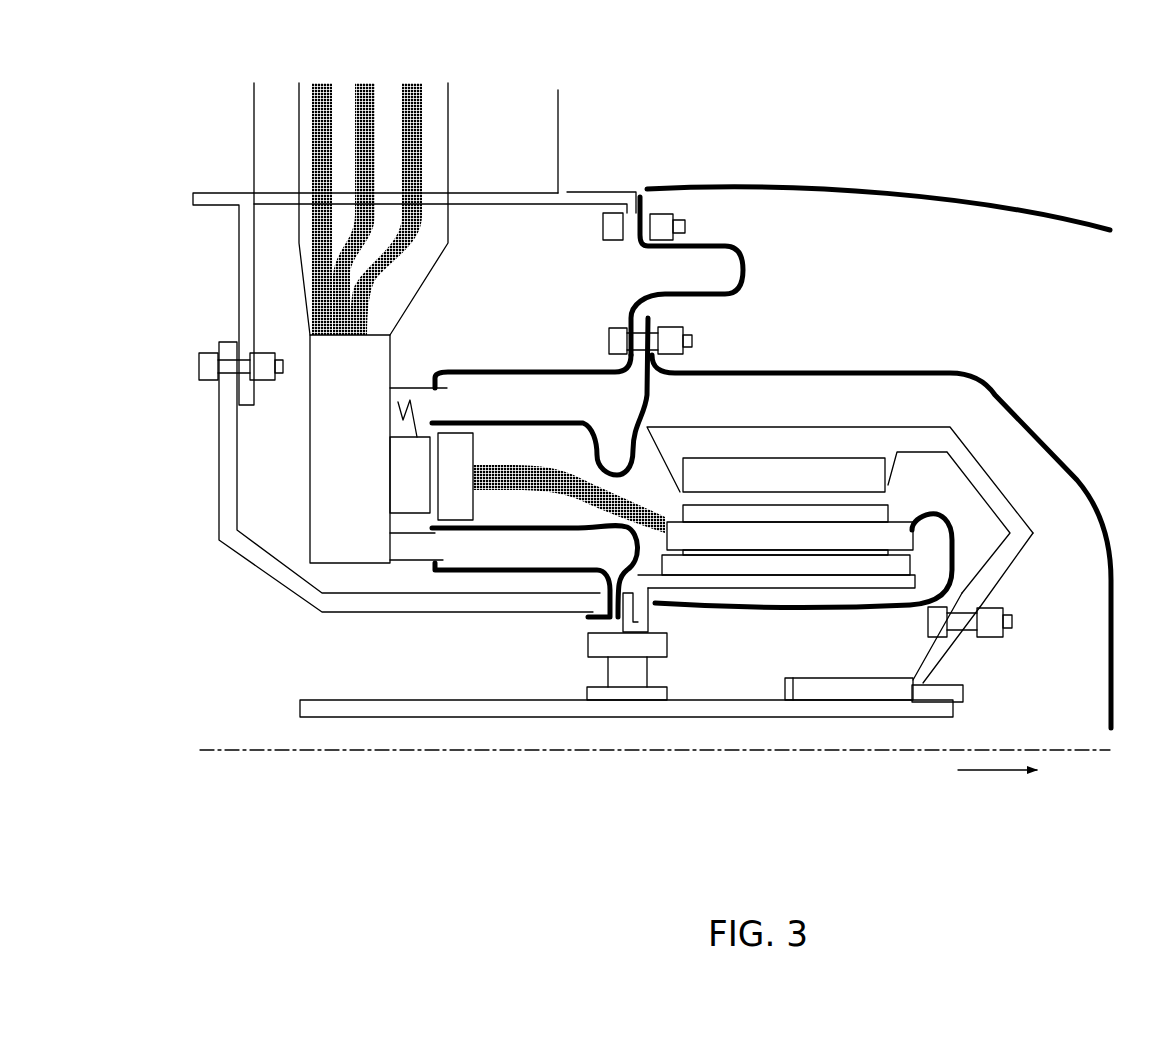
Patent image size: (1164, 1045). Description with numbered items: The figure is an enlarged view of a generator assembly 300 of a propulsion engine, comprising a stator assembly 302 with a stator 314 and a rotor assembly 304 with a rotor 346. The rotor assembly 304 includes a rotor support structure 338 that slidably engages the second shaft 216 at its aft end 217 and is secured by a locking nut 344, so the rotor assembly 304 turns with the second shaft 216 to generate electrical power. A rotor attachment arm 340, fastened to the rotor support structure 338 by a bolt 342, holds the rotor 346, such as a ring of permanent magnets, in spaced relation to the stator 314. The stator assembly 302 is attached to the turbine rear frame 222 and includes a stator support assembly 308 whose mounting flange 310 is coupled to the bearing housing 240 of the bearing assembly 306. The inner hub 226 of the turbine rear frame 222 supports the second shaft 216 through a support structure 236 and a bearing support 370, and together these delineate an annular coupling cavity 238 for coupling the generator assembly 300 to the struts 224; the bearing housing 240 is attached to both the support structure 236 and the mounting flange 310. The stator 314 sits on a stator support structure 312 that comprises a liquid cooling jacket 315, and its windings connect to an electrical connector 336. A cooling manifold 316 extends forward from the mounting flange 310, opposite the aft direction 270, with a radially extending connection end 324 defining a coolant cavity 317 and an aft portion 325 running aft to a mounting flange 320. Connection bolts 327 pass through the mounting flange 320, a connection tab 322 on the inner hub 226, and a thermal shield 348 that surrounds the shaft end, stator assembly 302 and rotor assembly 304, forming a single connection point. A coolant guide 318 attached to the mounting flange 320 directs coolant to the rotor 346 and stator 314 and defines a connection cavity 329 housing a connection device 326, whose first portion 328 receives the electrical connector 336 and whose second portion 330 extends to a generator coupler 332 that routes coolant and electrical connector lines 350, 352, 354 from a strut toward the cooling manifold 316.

The second shaft 216 is at (410, 718).
The aft end 217 is at (875, 702).
The turbine rear frame 222 is at (593, 173).
The struts 224 is at (560, 102).
The inner hub 226 is at (478, 192).
The support structure 236 is at (238, 272).
The coupling cavity 238 is at (495, 280).
The bearing housing 240 is at (592, 648).
The aft direction 270 is at (975, 778).
The generator assembly 300 is at (917, 343).
The stator assembly 302 is at (828, 703).
The rotor assembly 304 is at (977, 440).
The bearing assembly 306 is at (583, 673).
The stator support assembly 308 is at (743, 617).
The mounting flange 310 is at (648, 617).
The stator support structure 312 is at (807, 593).
The stator 314 is at (895, 507).
The liquid cooling jacket 315 is at (858, 575).
The cooling manifold 316 is at (480, 578).
The coolant cavity 317 is at (580, 410).
The coolant guide 318 is at (548, 421).
The mounting flange 320 is at (622, 335).
The connection tab 322 is at (742, 250).
The connection end 324 is at (435, 378).
The aft portion 325 is at (566, 369).
The connection device 326 is at (392, 422).
The connection bolt 327 is at (693, 340).
The first portion 328 is at (448, 457).
The connection cavity 329 is at (541, 464).
The second portion 330 is at (408, 483).
The generator coupler 332 is at (315, 535).
The electrical connector 336 is at (582, 492).
The rotor support structure 338 is at (948, 661).
The rotor attachment arm 340 is at (1008, 568).
The bolt 342 is at (1012, 622).
The locking nut 344 is at (966, 694).
The rotor 346 is at (785, 457).
The thermal shield 348 is at (1075, 466).
The electrical connector line 350 is at (412, 90).
The electrical connector line 352 is at (365, 88).
The electrical connector line 354 is at (322, 88).
The bearing support 370 is at (335, 612).